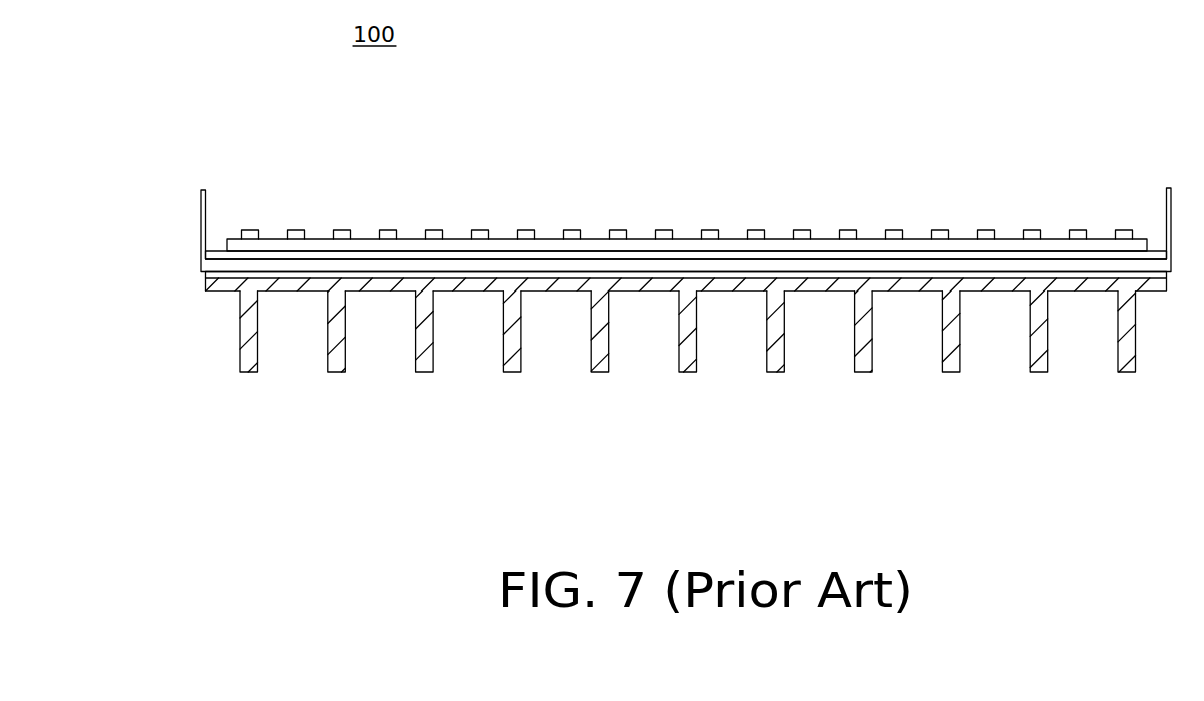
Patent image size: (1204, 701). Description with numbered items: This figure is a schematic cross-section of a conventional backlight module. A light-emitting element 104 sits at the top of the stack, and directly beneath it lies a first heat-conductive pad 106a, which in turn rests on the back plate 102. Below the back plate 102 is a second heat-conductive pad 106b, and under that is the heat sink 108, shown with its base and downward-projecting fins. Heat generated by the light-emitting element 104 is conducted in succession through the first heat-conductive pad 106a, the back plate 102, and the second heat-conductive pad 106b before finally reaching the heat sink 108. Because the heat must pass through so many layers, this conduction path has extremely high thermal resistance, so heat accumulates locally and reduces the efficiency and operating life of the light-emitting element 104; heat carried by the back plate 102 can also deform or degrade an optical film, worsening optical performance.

The back plate 102 is at (200, 217).
The light-emitting element 104 is at (870, 244).
The first heat-conductive pad 106a is at (463, 258).
The second heat-conductive pad 106b is at (392, 275).
The heat sink 108 is at (292, 285).